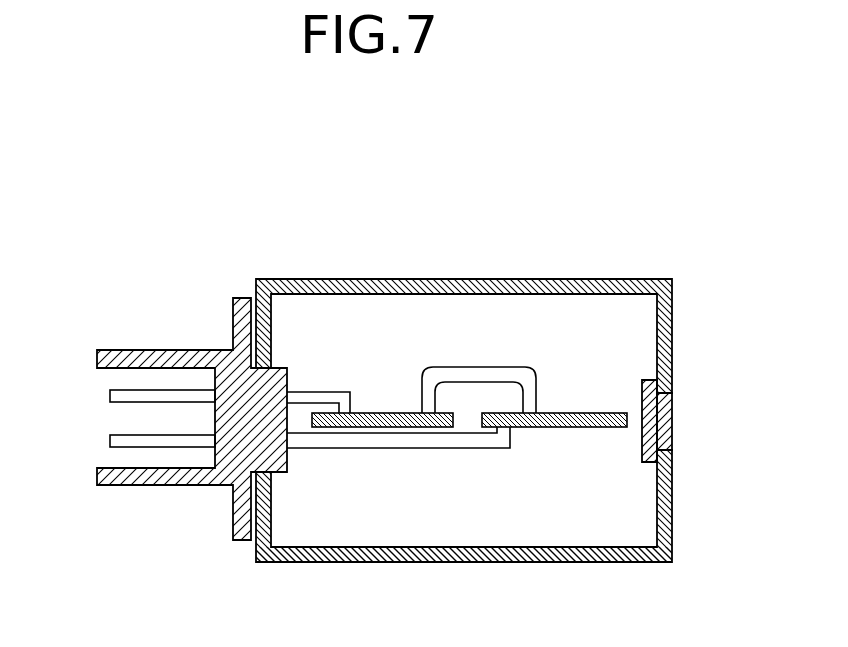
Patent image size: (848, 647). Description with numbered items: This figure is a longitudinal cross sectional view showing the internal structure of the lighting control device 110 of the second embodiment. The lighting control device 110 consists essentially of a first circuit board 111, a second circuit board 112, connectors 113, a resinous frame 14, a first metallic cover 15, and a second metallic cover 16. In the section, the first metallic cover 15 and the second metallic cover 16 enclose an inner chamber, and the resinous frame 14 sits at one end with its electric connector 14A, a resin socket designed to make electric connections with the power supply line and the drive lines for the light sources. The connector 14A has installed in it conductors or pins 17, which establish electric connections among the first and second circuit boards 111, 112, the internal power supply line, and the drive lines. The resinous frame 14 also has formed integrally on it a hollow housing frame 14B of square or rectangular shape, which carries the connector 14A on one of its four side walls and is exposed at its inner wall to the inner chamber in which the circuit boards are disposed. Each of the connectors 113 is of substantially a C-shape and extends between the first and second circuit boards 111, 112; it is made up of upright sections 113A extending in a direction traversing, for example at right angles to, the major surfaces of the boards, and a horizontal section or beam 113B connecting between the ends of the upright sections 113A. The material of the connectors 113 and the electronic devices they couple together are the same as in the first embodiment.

The lighting control device 110 is at (380, 206).
The resinous frame 14 is at (240, 310).
The electric connector 14A is at (152, 485).
The hollow housing frame 14B is at (672, 420).
The first metallic cover 15 is at (611, 279).
The second metallic cover 16 is at (613, 562).
The pins 17 is at (310, 398).
The first circuit board 111 is at (390, 427).
The second circuit board 112 is at (565, 428).
The connectors 113 is at (513, 320).
The upright sections 113A is at (421, 390).
The horizontal section 113B is at (458, 367).